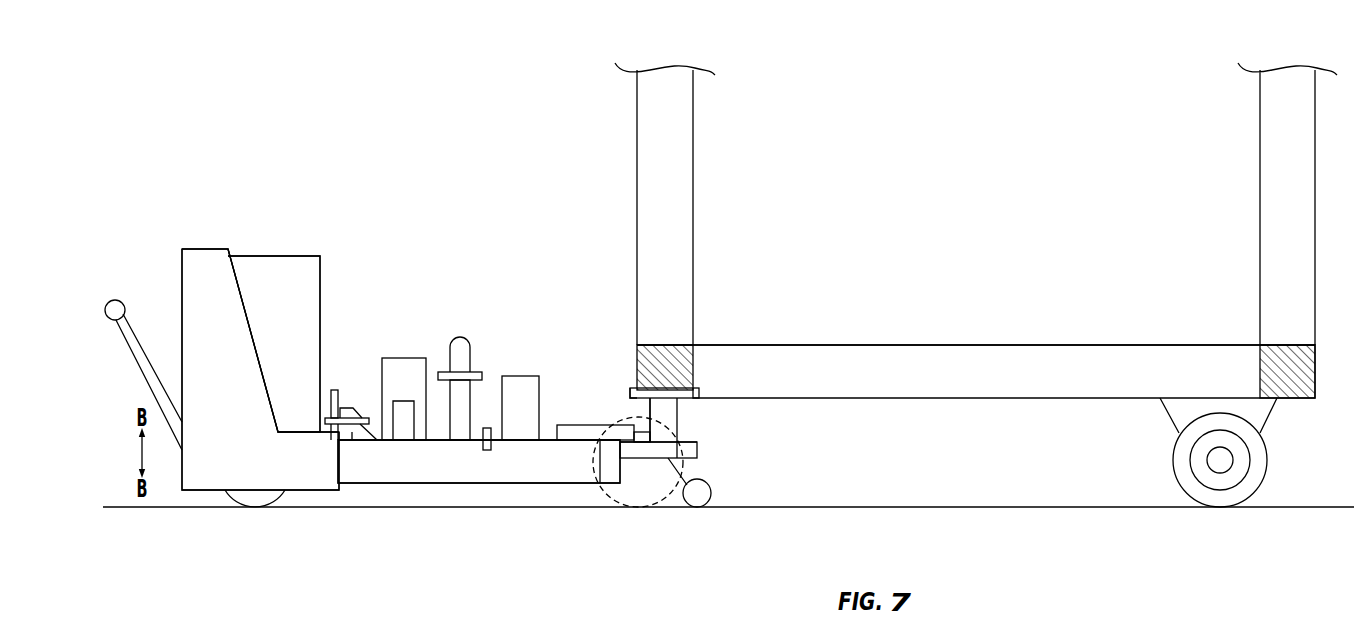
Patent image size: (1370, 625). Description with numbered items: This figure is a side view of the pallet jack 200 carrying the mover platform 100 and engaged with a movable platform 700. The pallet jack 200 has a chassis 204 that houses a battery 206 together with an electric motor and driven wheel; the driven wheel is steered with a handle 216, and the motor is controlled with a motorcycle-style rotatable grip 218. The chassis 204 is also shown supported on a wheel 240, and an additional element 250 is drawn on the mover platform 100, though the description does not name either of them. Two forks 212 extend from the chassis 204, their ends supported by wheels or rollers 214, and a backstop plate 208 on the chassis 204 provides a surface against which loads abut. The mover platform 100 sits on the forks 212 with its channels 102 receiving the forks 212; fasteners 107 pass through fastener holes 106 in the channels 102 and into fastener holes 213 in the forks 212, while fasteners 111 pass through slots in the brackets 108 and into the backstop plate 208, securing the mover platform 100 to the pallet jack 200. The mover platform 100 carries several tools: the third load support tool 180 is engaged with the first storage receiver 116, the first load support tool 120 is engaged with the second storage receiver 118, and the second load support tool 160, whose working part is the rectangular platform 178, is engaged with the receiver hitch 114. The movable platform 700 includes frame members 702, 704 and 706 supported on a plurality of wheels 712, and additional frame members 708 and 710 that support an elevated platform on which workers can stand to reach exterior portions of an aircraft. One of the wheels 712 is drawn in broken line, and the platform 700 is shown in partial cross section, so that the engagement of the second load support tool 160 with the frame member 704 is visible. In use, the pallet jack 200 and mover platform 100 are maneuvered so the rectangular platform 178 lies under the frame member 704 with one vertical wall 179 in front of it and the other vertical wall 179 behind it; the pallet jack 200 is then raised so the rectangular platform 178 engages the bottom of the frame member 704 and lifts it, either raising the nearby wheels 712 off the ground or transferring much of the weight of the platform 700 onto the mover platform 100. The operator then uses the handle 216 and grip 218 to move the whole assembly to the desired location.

The mover platform 100 is at (445, 230).
The channels 102 is at (402, 475).
The fastener holes 106 is at (497, 442).
The fasteners 107 is at (488, 452).
The brackets 108 is at (352, 432).
The fasteners 111 is at (363, 417).
The receiver hitch 114 is at (587, 402).
The first storage receiver 116 is at (460, 430).
The second storage receiver 118 is at (403, 432).
The first load support tool 120 is at (395, 345).
The second load support tool 160 is at (612, 358).
The second rectangular platform 178 is at (688, 398).
The vertical walls 179 is at (630, 390).
The third load support tool 180 is at (466, 318).
The pallet jack 200 is at (260, 208).
The chassis 204 is at (254, 458).
The battery 206 is at (303, 273).
The backstop plate 208 is at (333, 392).
The forks 212 is at (693, 452).
The fastener holes 213 is at (675, 468).
The wheels or rollers 214 is at (697, 498).
The handle 216 is at (132, 343).
The motorcycle-style rotatable grip 218 is at (115, 300).
The cart wheel 240 is at (252, 495).
The control box 250 is at (523, 387).
The movable platform 700 is at (975, 95).
The frame member 702 is at (980, 395).
The frame member 704 is at (685, 365).
The frame member 706 is at (1261, 367).
The frame member 708 is at (682, 213).
The frame member 710 is at (1267, 175).
The wheels 712 is at (637, 487).